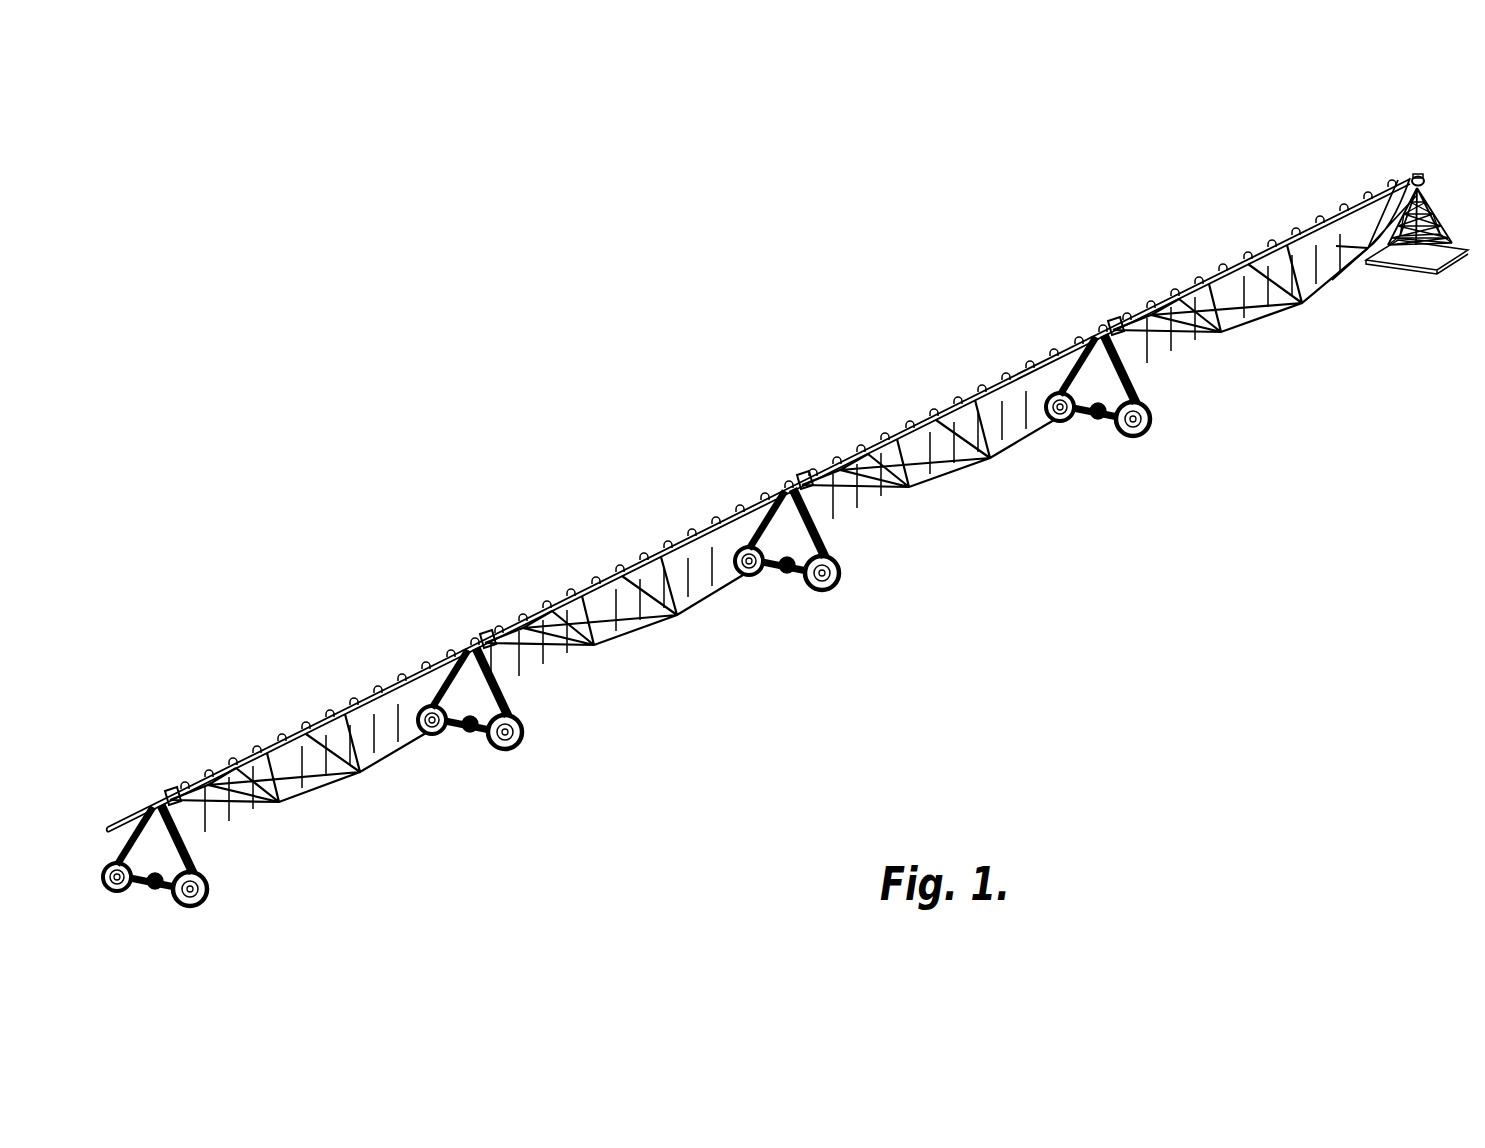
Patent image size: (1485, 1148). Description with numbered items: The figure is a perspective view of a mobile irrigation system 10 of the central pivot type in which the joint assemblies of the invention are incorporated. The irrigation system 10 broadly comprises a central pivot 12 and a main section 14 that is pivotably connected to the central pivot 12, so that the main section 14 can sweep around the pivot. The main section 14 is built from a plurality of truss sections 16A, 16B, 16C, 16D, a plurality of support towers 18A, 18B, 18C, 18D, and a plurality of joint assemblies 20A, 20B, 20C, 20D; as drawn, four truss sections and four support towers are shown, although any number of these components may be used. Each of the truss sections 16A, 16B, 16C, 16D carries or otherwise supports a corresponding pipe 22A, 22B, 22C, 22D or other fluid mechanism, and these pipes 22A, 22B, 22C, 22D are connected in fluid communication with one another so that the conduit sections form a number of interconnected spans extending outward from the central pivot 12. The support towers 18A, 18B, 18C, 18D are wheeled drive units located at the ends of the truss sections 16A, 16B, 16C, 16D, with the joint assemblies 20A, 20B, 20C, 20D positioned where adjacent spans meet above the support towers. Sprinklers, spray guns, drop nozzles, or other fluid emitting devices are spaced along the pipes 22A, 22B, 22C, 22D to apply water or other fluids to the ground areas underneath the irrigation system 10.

The mobile irrigation system 10 is at (858, 297).
The central pivot 12 is at (1451, 192).
The main section 14 is at (788, 368).
The truss section 16A is at (1295, 315).
The truss section 16B is at (993, 487).
The truss section 16C is at (680, 642).
The truss section 16D is at (355, 807).
The support tower 18A is at (1096, 312).
The support tower 18B is at (778, 462).
The support tower 18C is at (458, 618).
The support tower 18D is at (150, 789).
The joint assembly 20A is at (1081, 327).
The joint assembly 20B is at (770, 485).
The joint assembly 20C is at (453, 640).
The span joint 20D is at (173, 796).
The pipe 22A is at (1305, 225).
The pipe 22B is at (975, 395).
The pipe 22C is at (660, 565).
The pipe 22D is at (345, 720).